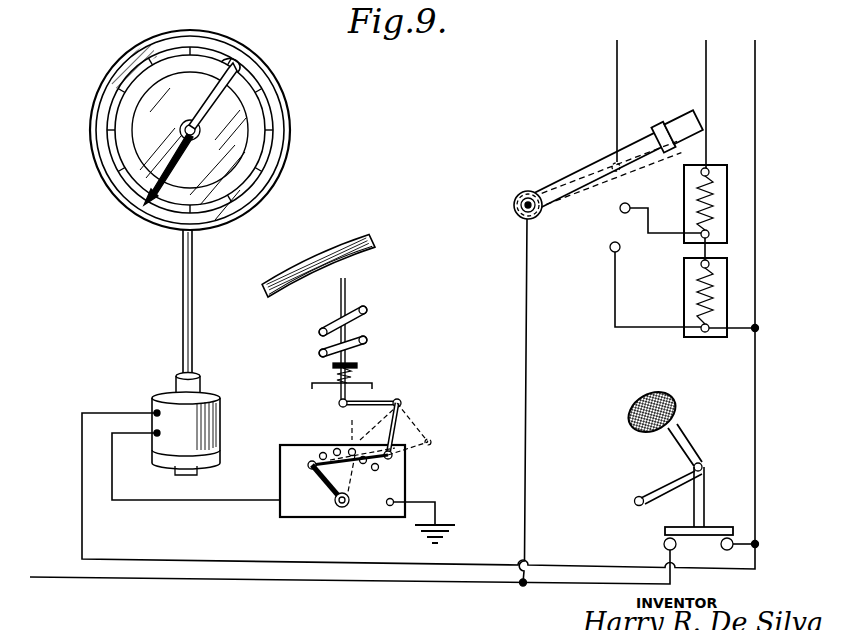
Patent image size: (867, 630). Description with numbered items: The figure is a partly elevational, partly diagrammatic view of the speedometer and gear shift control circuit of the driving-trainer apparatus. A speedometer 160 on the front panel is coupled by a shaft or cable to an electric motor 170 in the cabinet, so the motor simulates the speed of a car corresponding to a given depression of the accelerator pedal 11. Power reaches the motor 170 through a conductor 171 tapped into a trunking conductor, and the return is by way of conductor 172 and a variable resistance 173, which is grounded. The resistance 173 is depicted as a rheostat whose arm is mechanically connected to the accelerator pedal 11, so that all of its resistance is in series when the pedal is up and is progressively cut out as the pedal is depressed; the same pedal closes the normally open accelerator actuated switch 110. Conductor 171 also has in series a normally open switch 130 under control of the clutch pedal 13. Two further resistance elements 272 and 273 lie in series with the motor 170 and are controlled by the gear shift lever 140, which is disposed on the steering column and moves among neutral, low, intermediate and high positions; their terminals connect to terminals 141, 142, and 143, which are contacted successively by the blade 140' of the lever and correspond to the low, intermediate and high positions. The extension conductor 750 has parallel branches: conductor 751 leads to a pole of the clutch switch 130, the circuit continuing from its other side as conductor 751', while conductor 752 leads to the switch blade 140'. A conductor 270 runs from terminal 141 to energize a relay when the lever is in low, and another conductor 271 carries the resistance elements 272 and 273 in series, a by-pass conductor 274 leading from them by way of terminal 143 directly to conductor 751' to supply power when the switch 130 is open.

The speedometer 160 is at (338, 135).
The electric motor 170 is at (152, 375).
The conductor 172 is at (192, 501).
The conductor 171 is at (600, 566).
The extension conductor 750 is at (183, 579).
The conductor 751 is at (556, 595).
The conductor 751' is at (735, 472).
The conductor 752 is at (525, 483).
The accelerator pedal 11 is at (300, 280).
The accelerator actuated switch 110 is at (412, 333).
The variable resistance 173 is at (330, 518).
The gear shift lever 140 is at (609, 151).
The switch blade 140' is at (612, 169).
The terminal 141 is at (622, 168).
The terminal 142 is at (620, 209).
The terminal 143 is at (610, 248).
The conductor 270 is at (620, 74).
The conductor 271 is at (708, 103).
The resistance element 272 is at (712, 208).
The resistance element 273 is at (712, 291).
The by-pass conductor 274 is at (742, 330).
The clutch pedal 13 is at (646, 469).
The switch 130 is at (716, 526).